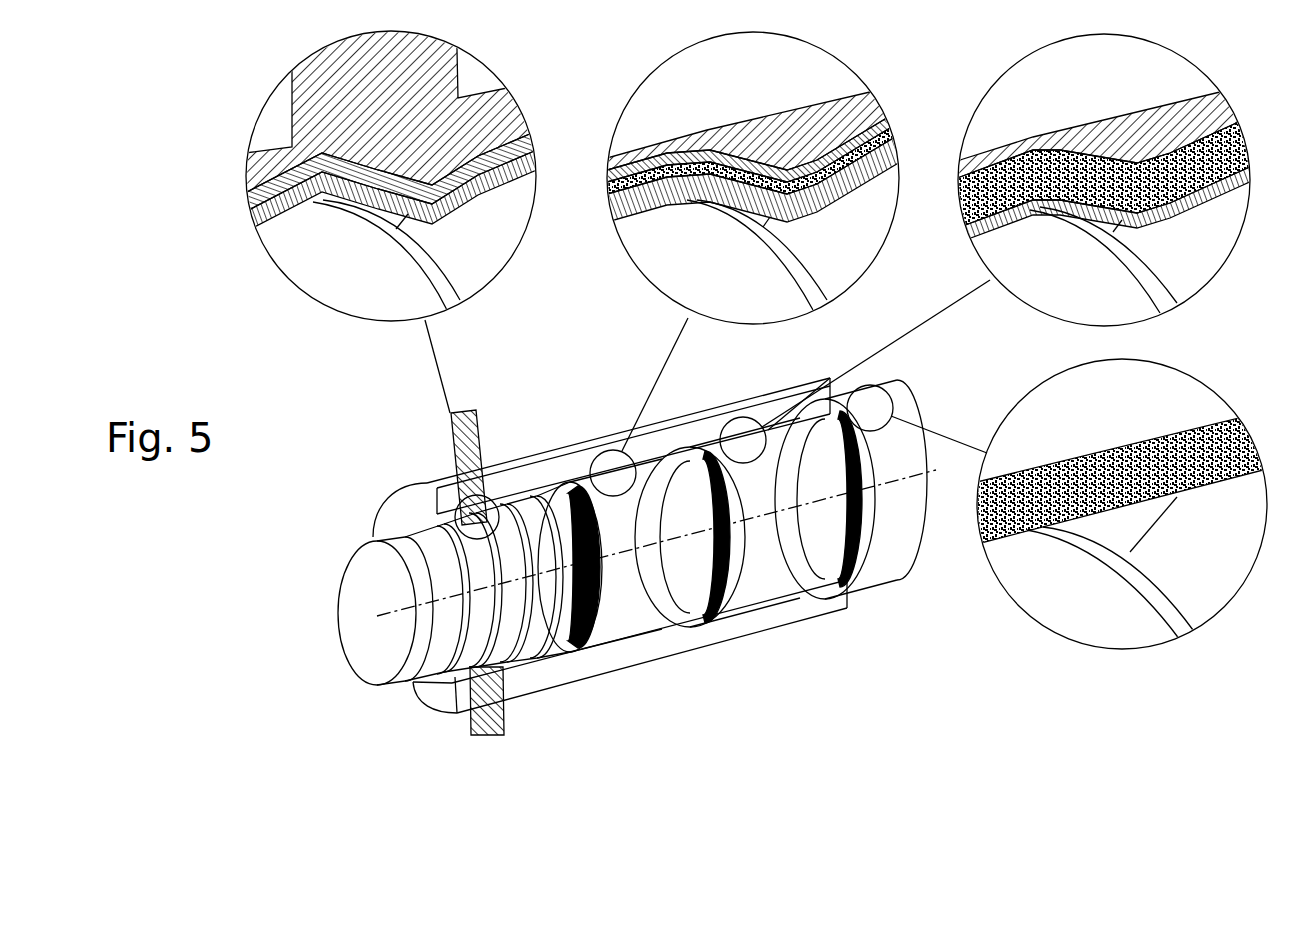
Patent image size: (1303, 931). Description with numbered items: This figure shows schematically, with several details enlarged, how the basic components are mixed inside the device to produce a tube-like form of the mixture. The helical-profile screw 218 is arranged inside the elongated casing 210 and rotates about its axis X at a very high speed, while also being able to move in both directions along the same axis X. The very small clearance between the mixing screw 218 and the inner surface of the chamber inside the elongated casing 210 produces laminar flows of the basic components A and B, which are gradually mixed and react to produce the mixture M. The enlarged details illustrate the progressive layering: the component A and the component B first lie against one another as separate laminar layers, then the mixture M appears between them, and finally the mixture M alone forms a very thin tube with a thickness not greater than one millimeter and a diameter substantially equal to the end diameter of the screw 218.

The elongated casing 210 is at (755, 618).
The helical-profile screw 218 is at (375, 640).
The basic component A (polyol) A is at (476, 412).
The basic component B (isocyanate) B is at (477, 733).
The mixture M is at (888, 121).
The axis X is at (372, 616).